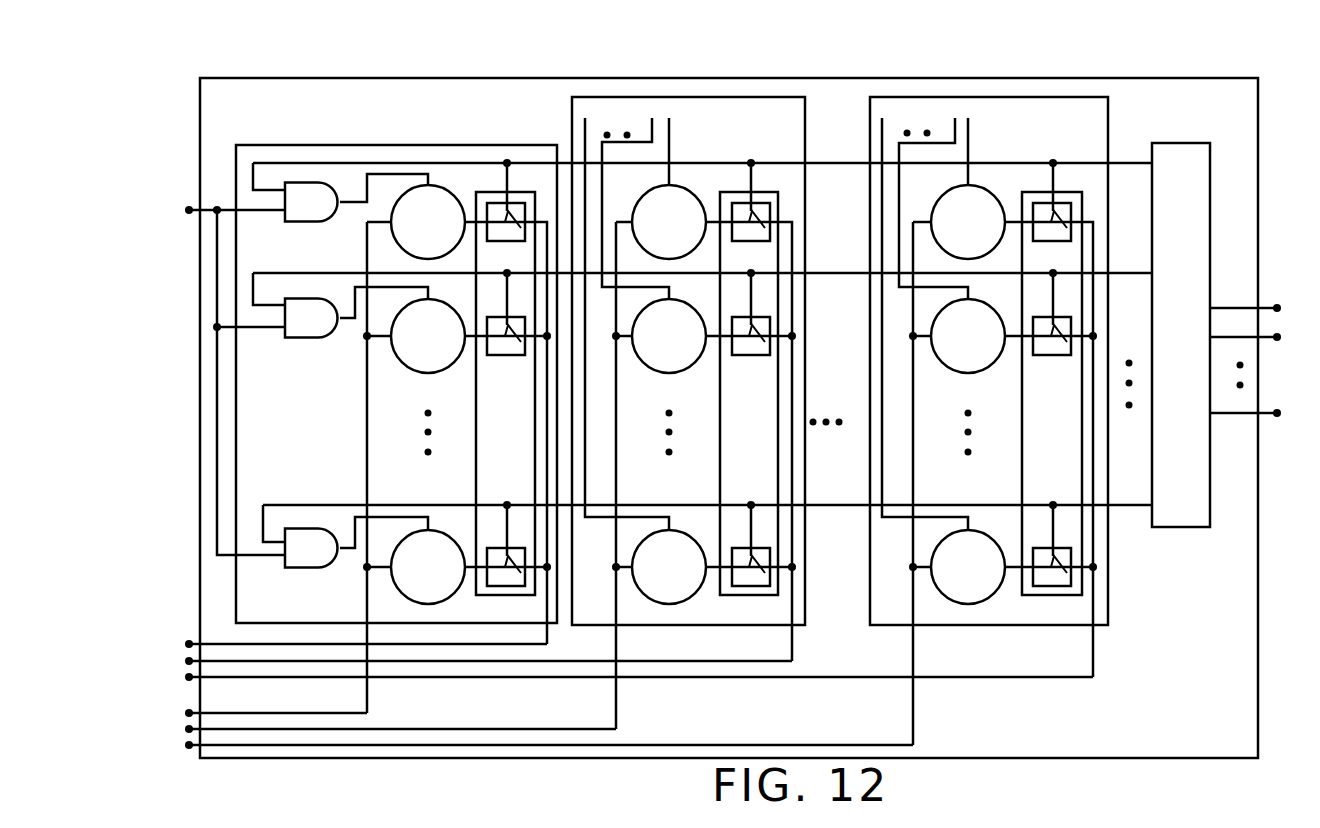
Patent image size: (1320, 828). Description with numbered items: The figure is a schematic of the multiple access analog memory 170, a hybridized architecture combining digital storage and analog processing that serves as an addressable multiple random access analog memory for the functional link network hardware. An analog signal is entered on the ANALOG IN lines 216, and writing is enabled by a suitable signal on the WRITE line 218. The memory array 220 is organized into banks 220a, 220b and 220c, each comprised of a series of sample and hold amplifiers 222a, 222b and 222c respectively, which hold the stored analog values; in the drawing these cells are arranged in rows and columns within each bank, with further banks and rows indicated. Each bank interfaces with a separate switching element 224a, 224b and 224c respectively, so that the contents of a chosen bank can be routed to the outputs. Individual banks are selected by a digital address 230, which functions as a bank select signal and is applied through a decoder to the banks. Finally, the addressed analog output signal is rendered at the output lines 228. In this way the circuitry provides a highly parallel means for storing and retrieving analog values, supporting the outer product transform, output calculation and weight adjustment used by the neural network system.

The multiple access analog memory 170 is at (192, 470).
The ANALOG IN lines 216 is at (197, 760).
The WRITE line 218 is at (188, 204).
The multiple access analog memory array (MAAM) 220 is at (930, 72).
The first bank 220a is at (367, 72).
The second bank 220b is at (726, 63).
The further bank 220c is at (989, 421).
The sample and hold amplifiers of first bank 222a is at (372, 138).
The sample and hold amplifiers of second bank 222b is at (684, 157).
The sample and hold amplifiers of further bank 222c is at (989, 158).
The first switching element 224a is at (504, 140).
The second switching element 224b is at (758, 157).
The further switching element 224c is at (1035, 159).
The output lines 228 is at (193, 636).
The digital address 230 is at (1273, 274).